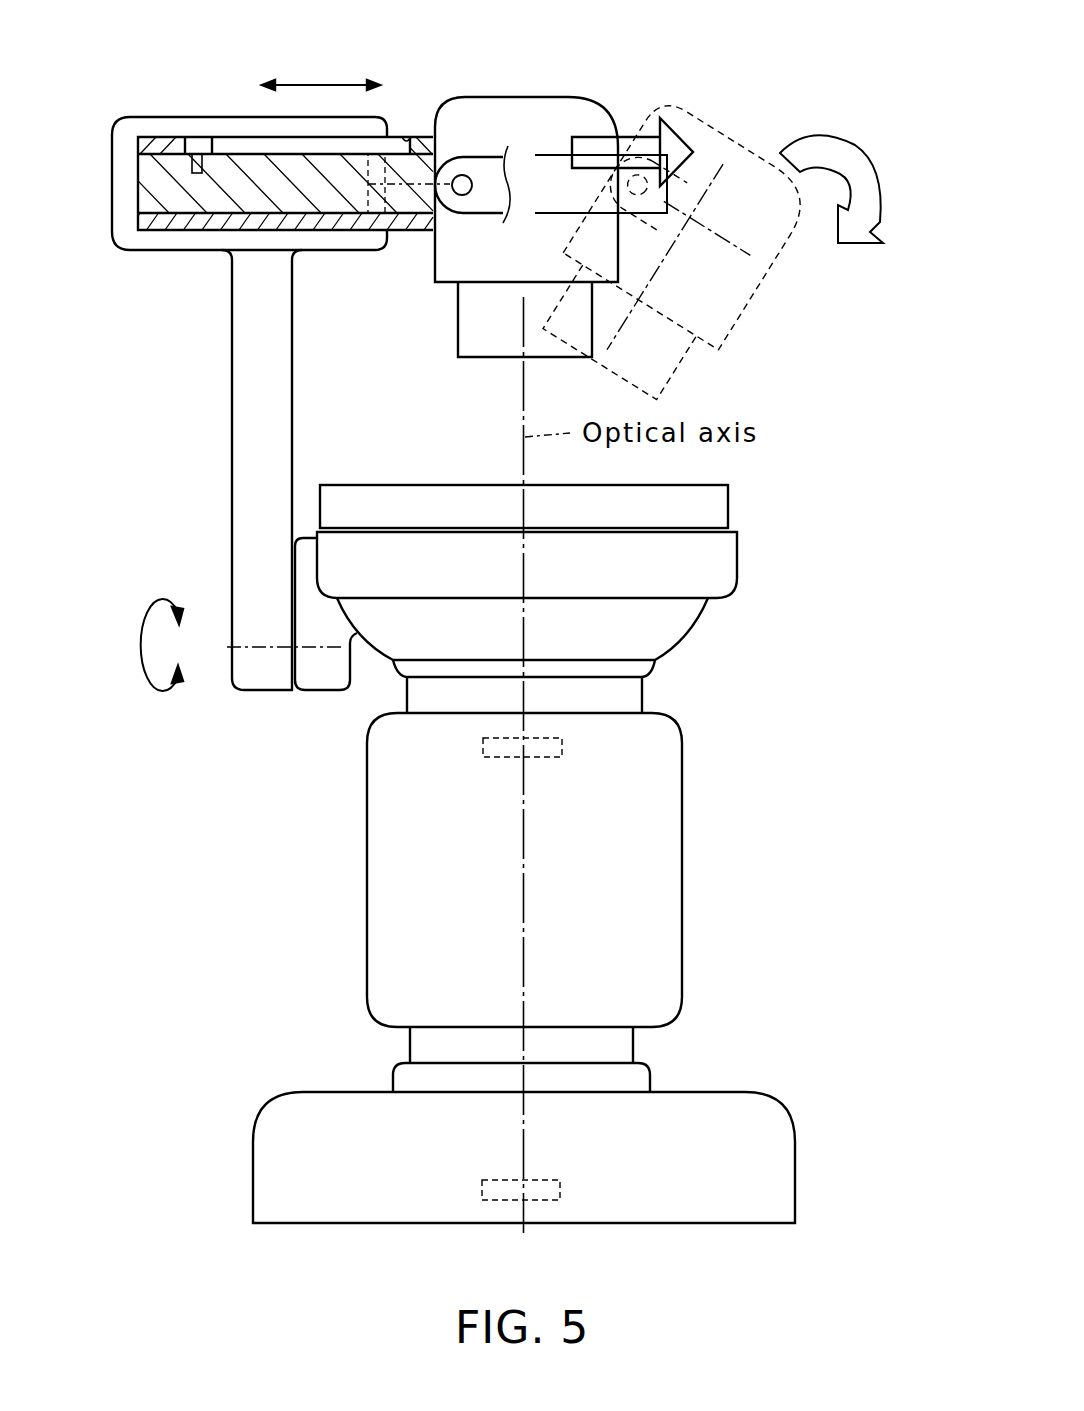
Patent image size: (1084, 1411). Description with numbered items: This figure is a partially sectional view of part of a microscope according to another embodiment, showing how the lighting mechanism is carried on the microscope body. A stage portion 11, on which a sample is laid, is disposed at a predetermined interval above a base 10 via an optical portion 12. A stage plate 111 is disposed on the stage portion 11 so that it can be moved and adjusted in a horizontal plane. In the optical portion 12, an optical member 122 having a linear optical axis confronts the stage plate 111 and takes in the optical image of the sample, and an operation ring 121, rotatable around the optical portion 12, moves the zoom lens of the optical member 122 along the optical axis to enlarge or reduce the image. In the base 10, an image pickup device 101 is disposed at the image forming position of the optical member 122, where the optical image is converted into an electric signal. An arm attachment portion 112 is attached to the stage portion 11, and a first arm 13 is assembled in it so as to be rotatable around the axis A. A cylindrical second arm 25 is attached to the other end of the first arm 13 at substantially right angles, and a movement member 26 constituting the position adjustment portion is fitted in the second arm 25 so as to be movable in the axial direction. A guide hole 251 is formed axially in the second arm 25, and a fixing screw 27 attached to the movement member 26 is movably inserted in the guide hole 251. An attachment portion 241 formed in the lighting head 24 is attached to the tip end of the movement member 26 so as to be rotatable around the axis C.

The base 10 is at (800, 1148).
The image pickup device 101 is at (562, 1190).
The stage portion 11 is at (738, 557).
The stage plate 111 is at (728, 501).
The arm attachment portion 112 is at (322, 692).
The optical portion 12 is at (643, 697).
The operation ring 121 is at (682, 868).
The optical member 122 is at (565, 750).
The first arm 13 is at (232, 505).
The lighting head 24 is at (587, 93).
The attachment portion 241 is at (433, 228).
The second arm 25 is at (187, 222).
The guide hole 251 is at (404, 137).
The movement member 26 is at (150, 193).
The fixing screw 27 is at (200, 137).